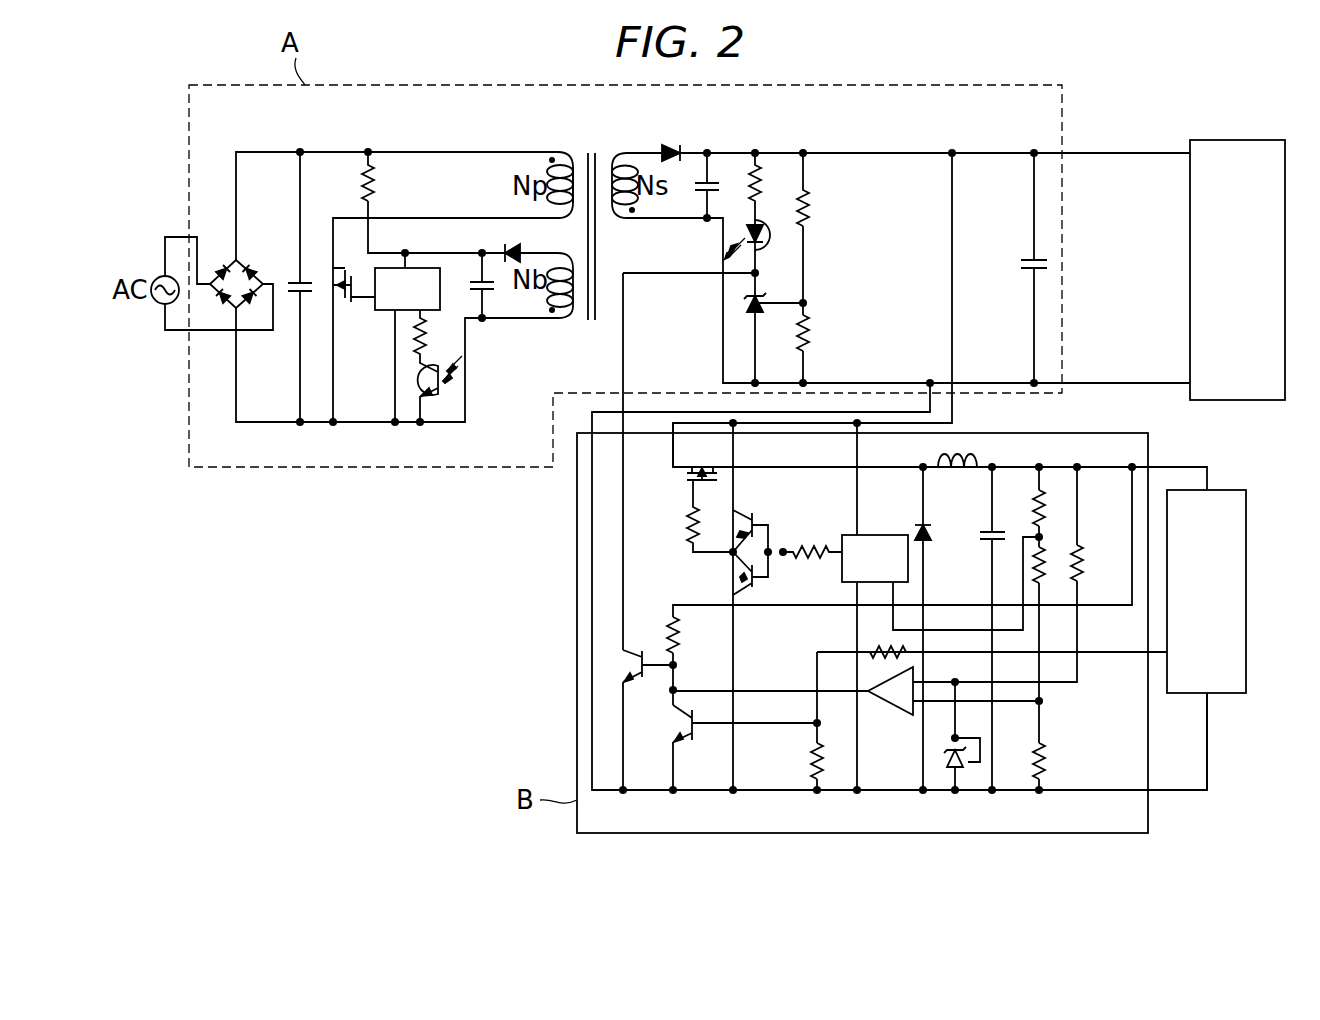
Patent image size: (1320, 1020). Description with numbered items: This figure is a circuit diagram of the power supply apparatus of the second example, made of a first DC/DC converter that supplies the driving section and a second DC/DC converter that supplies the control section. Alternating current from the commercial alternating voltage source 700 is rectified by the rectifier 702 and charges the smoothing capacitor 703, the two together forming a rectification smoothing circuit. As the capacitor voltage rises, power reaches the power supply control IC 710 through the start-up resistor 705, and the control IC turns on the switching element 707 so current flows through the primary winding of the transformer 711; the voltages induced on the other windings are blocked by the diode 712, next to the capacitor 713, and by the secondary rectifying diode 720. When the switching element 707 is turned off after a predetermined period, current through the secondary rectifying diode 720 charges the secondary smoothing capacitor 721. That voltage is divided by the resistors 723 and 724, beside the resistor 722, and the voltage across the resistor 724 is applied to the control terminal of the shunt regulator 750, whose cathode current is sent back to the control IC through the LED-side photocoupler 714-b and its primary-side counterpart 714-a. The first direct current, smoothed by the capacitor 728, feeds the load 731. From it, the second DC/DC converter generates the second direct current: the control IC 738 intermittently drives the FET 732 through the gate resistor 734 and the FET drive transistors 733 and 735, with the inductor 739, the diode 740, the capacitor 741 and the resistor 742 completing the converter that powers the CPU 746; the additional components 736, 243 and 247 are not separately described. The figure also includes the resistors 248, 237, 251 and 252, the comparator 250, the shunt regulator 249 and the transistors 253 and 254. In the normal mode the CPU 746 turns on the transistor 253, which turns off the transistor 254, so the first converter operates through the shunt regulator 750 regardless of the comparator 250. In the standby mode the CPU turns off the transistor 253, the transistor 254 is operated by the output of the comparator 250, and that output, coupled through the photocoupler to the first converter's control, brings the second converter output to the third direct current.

The commercial alternating voltage source 700 is at (160, 266).
The rectifier 702 is at (221, 262).
The smoothing capacitor 703 is at (295, 278).
The start-up resistor 705 is at (380, 184).
The switching element 707 is at (333, 268).
The power supply control IC 710 is at (392, 312).
The transformer 711 is at (590, 152).
The diode 712 is at (498, 250).
The capacitor 713 is at (495, 292).
The phototransistor of photocoupler 714-a is at (455, 385).
The LED-side photocoupler 714-b is at (770, 248).
The secondary rectifying diode 720 is at (670, 150).
The secondary smoothing capacitor 721 is at (692, 186).
The resistor 722 is at (760, 180).
The resistor 723 is at (812, 210).
The resistor 724 is at (812, 335).
The capacitor 728 is at (1026, 259).
The load 731 is at (1240, 140).
The FET 732 is at (702, 467).
The FET drive transistor 733 is at (752, 518).
The gate resistor 734 is at (685, 520).
The FET drive transistor 735 is at (737, 578).
The resistor 736 is at (814, 546).
The control IC 738 is at (842, 567).
The inductor 739 is at (958, 472).
The diode 740 is at (917, 524).
The capacitor 741 is at (985, 541).
The resistor 742 is at (1048, 502).
The CPU 746 is at (1234, 490).
The shunt regulator 750 is at (745, 303).
The resistor 237 is at (872, 646).
The resistor 243 is at (1047, 572).
The resistor 247 is at (1085, 570).
The resistor 248 is at (1048, 760).
The shunt regulator 249 is at (965, 768).
The comparator 250 is at (890, 712).
The resistor 251 is at (808, 756).
The resistor 252 is at (682, 636).
The transistor 253 is at (690, 736).
The transistor 254 is at (642, 678).